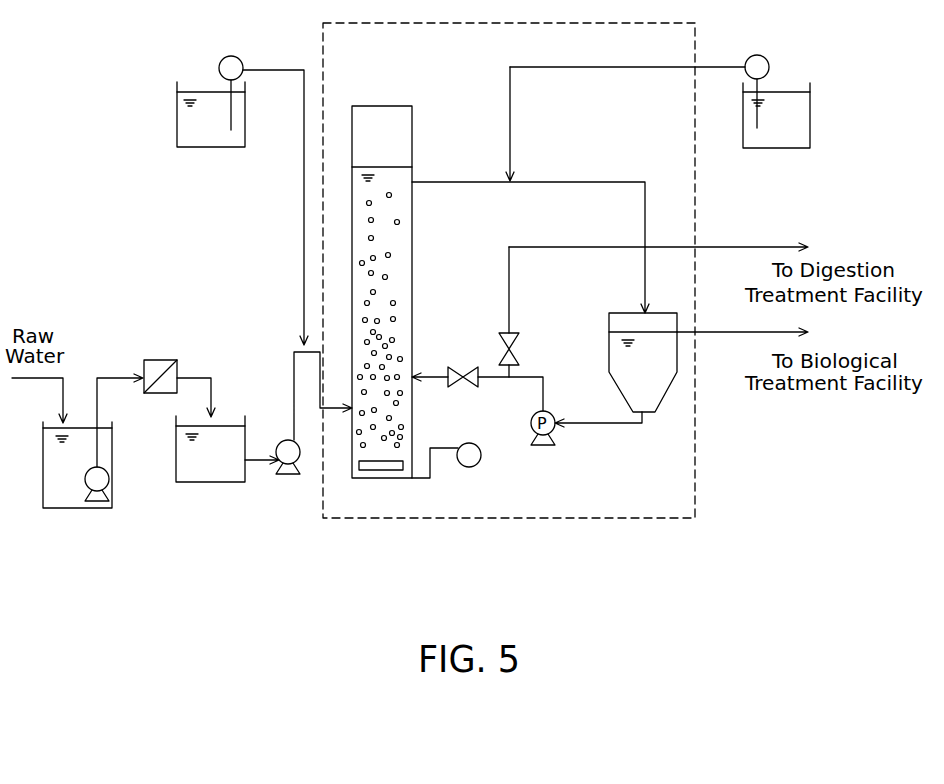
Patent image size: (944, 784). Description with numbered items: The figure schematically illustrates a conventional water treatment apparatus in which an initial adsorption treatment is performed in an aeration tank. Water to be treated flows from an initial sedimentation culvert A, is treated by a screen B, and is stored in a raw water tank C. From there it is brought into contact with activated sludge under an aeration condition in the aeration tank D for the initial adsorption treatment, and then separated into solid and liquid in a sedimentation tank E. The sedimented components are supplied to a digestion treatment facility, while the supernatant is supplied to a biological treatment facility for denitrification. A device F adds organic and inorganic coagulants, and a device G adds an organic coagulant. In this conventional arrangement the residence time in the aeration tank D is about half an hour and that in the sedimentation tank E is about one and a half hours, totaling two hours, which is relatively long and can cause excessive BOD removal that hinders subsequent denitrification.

The initial sedimentation culvert A is at (70, 508).
The screen B is at (162, 358).
The raw water tank C is at (210, 482).
The aeration tank D is at (379, 478).
The sedimentation tank E is at (650, 402).
The device for adding organic and inorganic coagulants F is at (209, 147).
The device for adding an organic coagulant G is at (776, 143).